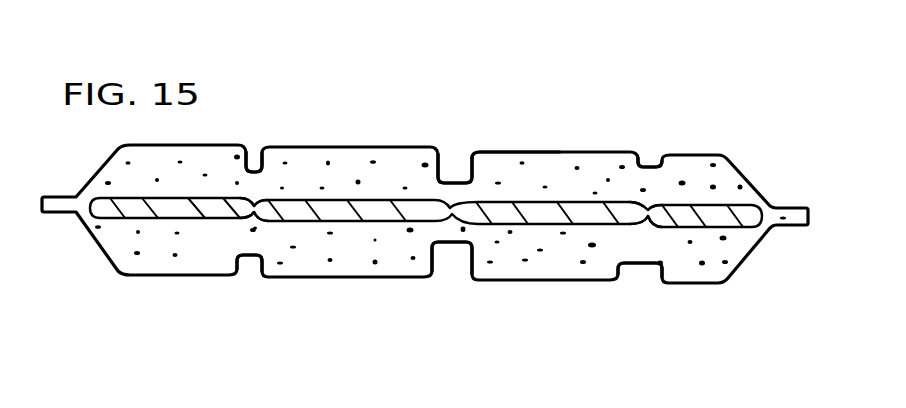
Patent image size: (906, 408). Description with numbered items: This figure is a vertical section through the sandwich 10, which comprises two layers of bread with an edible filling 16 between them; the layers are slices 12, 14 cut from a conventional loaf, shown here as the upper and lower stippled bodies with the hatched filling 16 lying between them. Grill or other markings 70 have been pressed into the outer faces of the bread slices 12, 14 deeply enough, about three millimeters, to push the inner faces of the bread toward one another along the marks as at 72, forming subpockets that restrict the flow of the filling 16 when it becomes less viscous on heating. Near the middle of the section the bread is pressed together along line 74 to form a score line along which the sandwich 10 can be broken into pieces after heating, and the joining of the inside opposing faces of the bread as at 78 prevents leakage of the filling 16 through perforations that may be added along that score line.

The sandwich 10 is at (712, 151).
The slice 12 is at (560, 157).
The slice 14 is at (358, 263).
The edible filling 16 is at (518, 212).
The markings 70 is at (262, 148).
The pressed inner faces 72 is at (256, 200).
The score line 74 is at (456, 180).
The joined inside opposing faces 78 is at (476, 152).